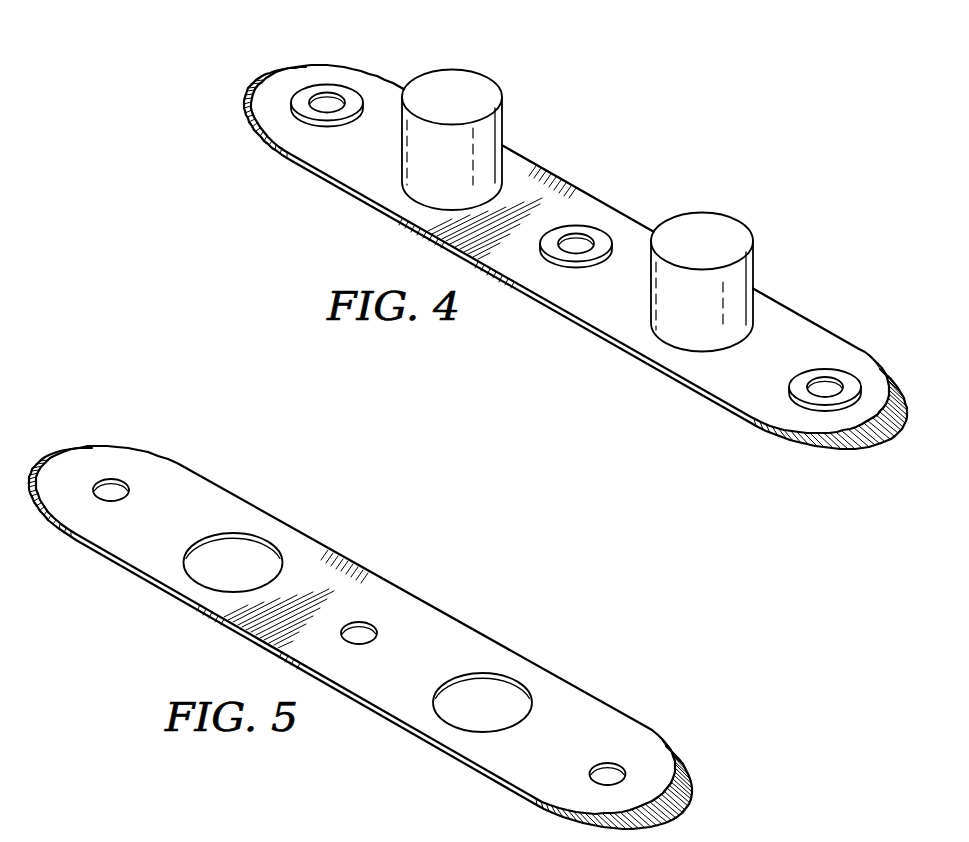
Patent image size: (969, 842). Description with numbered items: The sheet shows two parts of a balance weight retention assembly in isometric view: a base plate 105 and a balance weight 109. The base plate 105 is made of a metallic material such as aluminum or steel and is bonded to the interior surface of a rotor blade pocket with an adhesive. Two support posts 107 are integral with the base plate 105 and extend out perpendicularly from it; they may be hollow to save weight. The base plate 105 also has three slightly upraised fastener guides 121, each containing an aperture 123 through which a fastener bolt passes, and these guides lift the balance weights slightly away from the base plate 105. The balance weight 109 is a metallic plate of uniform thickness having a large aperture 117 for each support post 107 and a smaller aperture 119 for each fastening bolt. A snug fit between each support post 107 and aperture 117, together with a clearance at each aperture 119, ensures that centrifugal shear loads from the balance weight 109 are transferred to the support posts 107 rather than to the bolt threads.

In FIG. 4, the base plate 105 is at (527, 177).
In FIG. 4, the support post 107 is at (463, 82).
In FIG. 5, the balance weight 109 is at (307, 557).
In FIG. 5, the aperture 117 is at (265, 582).
In FIG. 5, the aperture 119 is at (112, 484).
In FIG. 4, the fastener guide 121 is at (343, 91).
In FIG. 4, the aperture 123 is at (326, 106).